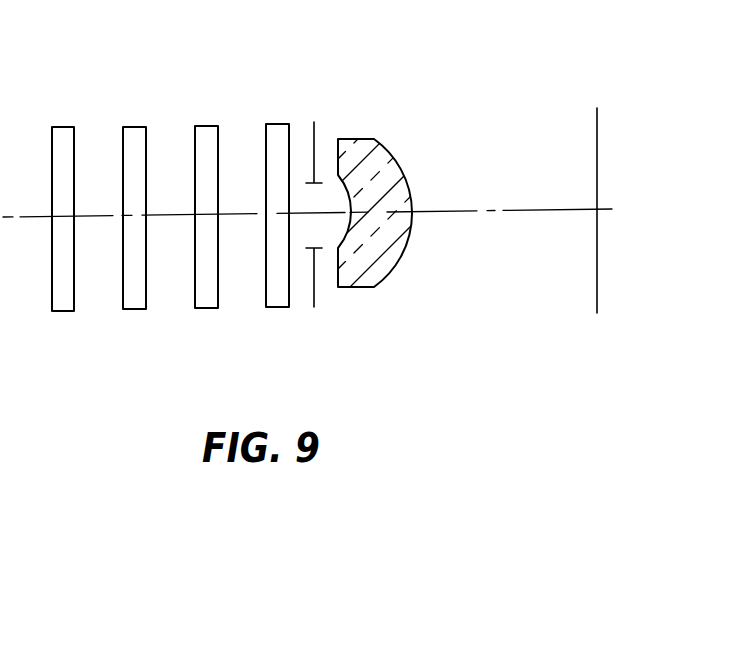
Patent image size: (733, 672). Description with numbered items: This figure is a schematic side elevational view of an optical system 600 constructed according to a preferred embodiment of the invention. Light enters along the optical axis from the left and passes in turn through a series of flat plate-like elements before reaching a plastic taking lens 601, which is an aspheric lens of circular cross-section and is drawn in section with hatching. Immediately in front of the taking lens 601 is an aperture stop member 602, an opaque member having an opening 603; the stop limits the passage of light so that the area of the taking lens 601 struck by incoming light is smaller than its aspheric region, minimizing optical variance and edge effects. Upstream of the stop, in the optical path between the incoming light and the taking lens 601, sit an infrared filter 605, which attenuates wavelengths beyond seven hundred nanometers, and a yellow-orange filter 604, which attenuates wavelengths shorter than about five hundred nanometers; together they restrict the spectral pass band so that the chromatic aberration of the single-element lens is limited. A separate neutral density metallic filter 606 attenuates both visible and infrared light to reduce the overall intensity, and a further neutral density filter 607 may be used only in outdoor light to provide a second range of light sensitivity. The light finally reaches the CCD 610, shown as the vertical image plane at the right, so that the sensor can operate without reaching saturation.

The optical system 600 is at (154, 41).
The plastic taking lens 601 is at (387, 160).
The aperture stop member 602 is at (315, 285).
The opening 603 is at (317, 233).
The yellow-orange filter 604 is at (205, 133).
The infrared filter 605 is at (275, 133).
The neutral density metallic filter 606 is at (130, 135).
The further neutral density filter 607 is at (63, 135).
The CCD 610 is at (597, 157).